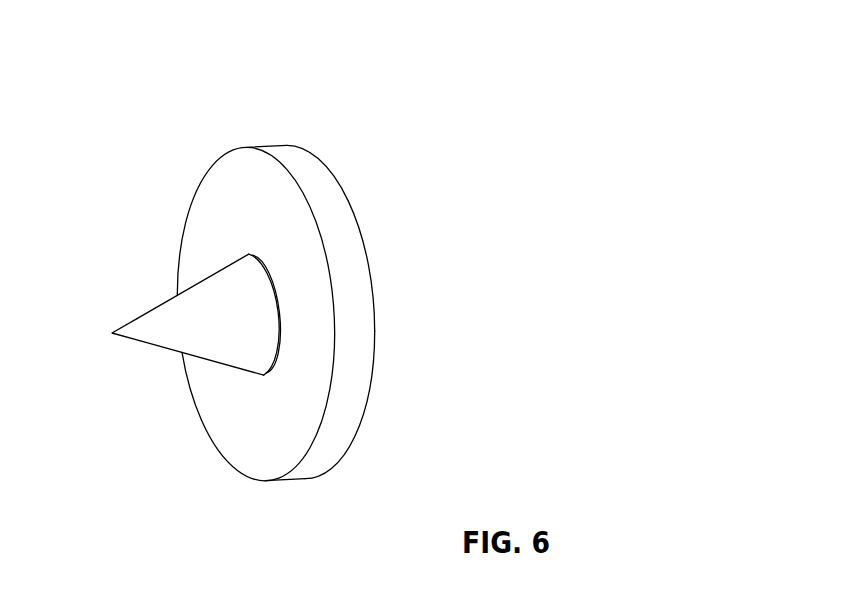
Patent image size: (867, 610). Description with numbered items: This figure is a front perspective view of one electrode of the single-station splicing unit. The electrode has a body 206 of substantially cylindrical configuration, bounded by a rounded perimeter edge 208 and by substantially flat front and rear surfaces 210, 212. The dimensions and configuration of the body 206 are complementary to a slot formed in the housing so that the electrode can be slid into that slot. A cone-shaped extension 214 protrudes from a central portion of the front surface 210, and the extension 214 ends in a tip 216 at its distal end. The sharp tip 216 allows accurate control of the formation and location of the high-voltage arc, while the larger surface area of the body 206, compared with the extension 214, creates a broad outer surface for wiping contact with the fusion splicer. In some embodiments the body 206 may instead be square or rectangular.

The body 206 is at (378, 355).
The rounded perimeter edge 208 is at (350, 425).
The front surface 210 is at (208, 197).
The rear surface 212 is at (332, 182).
The cone-shaped extension 214 is at (160, 305).
The tip 216 is at (112, 333).